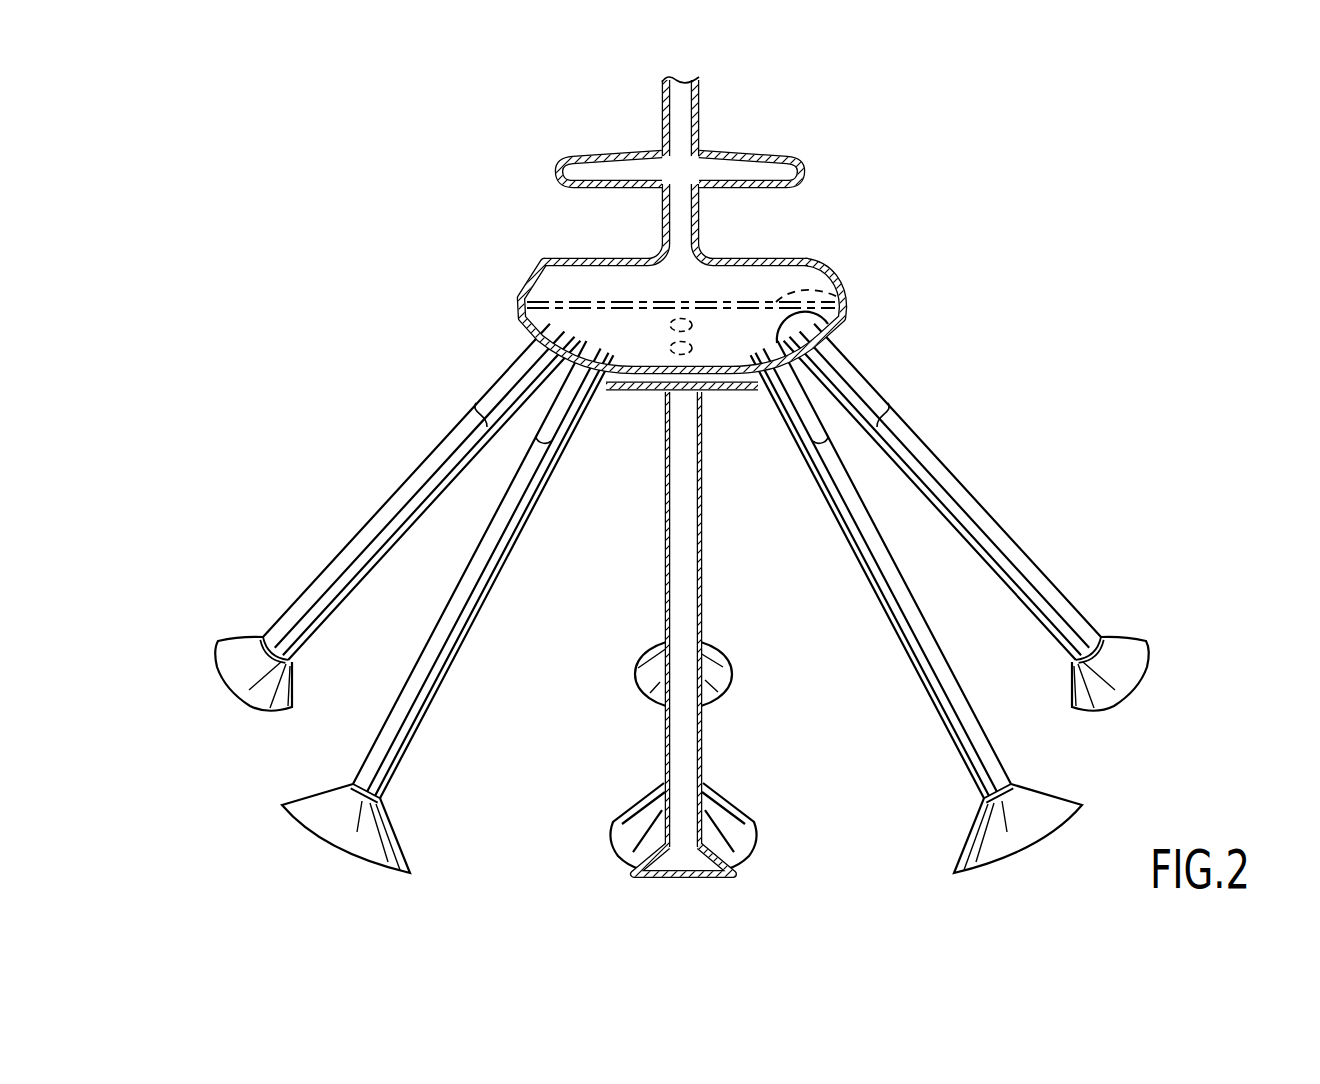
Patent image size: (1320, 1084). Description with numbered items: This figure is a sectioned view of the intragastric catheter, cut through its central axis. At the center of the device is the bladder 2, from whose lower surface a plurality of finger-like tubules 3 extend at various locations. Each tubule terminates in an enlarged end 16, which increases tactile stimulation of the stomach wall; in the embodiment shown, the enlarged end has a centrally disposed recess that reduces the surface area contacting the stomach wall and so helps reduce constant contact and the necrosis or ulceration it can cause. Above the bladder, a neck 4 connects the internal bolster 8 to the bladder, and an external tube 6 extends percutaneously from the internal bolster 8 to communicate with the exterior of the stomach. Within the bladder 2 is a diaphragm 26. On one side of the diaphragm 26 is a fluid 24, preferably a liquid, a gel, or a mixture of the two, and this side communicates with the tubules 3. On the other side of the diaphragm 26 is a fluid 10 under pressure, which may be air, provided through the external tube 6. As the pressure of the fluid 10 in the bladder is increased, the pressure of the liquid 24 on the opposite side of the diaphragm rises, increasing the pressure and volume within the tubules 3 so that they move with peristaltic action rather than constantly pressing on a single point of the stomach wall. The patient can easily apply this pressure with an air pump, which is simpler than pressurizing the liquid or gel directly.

The bladder 2 is at (798, 274).
The finger-like tubules 3 is at (378, 525).
The neck 4 is at (682, 230).
The external tube 6 is at (681, 122).
The internal bolster 8 is at (785, 175).
The fluid under pressure 10 is at (597, 280).
The enlarged end 16 is at (232, 650).
The fluid 24 is at (727, 390).
The diaphragm 26 is at (828, 325).